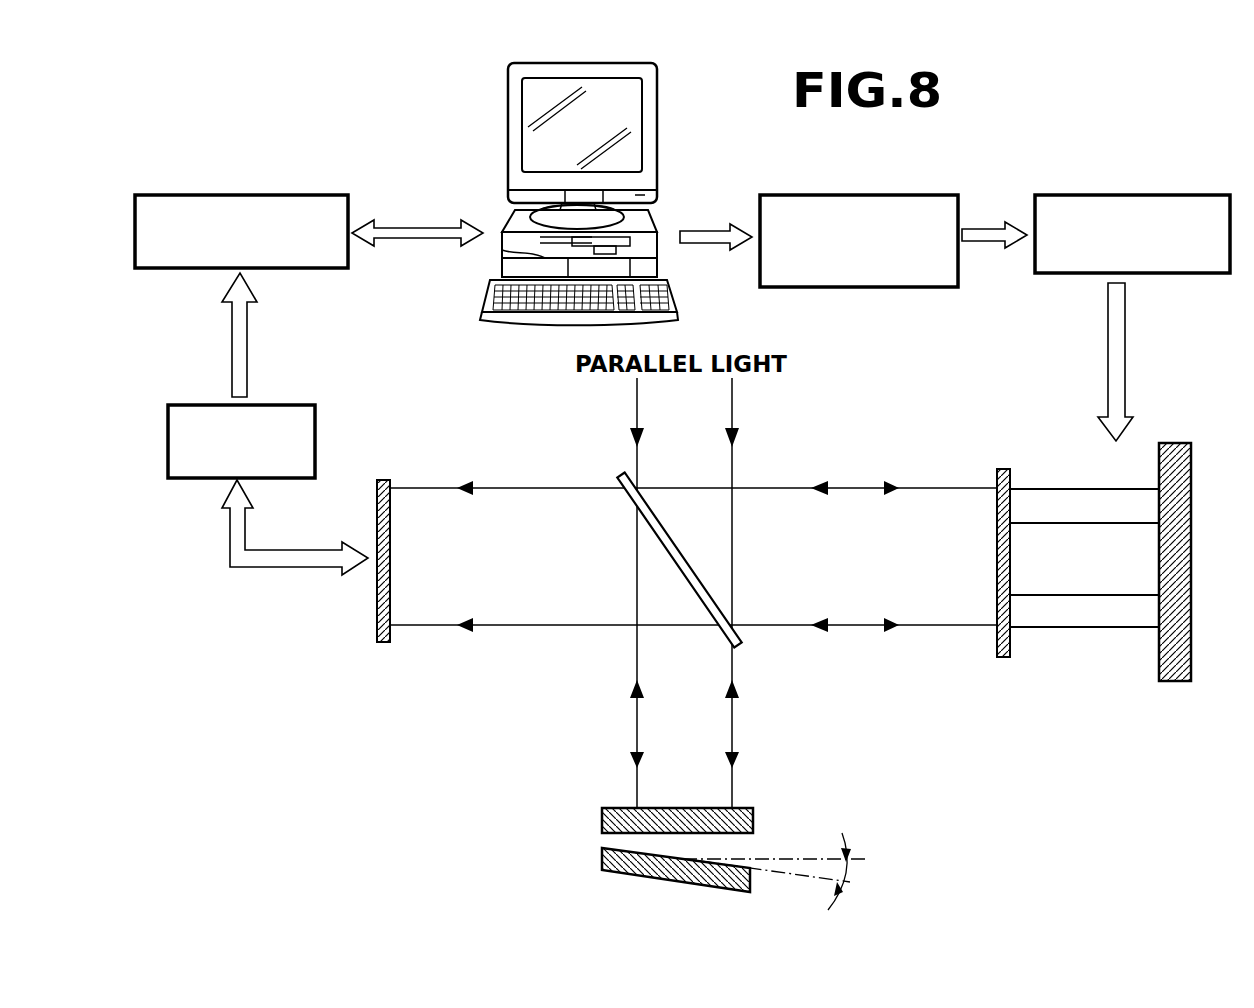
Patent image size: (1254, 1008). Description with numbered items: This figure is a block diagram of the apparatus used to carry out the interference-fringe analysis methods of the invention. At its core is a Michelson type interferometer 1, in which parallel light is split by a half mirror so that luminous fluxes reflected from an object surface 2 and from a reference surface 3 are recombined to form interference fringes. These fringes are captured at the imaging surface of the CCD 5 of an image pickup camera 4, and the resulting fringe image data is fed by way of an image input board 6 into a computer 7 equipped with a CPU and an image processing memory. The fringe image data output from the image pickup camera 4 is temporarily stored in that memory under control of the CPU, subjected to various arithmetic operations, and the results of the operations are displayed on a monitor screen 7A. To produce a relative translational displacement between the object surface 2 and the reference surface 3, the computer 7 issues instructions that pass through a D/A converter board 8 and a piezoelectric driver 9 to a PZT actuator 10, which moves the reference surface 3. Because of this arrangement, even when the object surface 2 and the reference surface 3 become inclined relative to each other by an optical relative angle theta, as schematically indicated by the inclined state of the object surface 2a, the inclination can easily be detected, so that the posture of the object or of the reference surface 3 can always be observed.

The Michelson type interferometer 1 is at (590, 466).
The object surface 2 is at (755, 808).
The inclined object surface 2a is at (600, 853).
The reference surface 3 is at (1003, 657).
The image pickup camera 4 is at (188, 478).
The CCD 5 is at (385, 642).
The image input board 6 is at (312, 195).
The computer 7 is at (564, 194).
The monitor screen 7A is at (538, 138).
The D/A converter board 8 is at (918, 195).
The piezoelectric driver 9 is at (1180, 195).
The PZT actuator 10 is at (1060, 468).